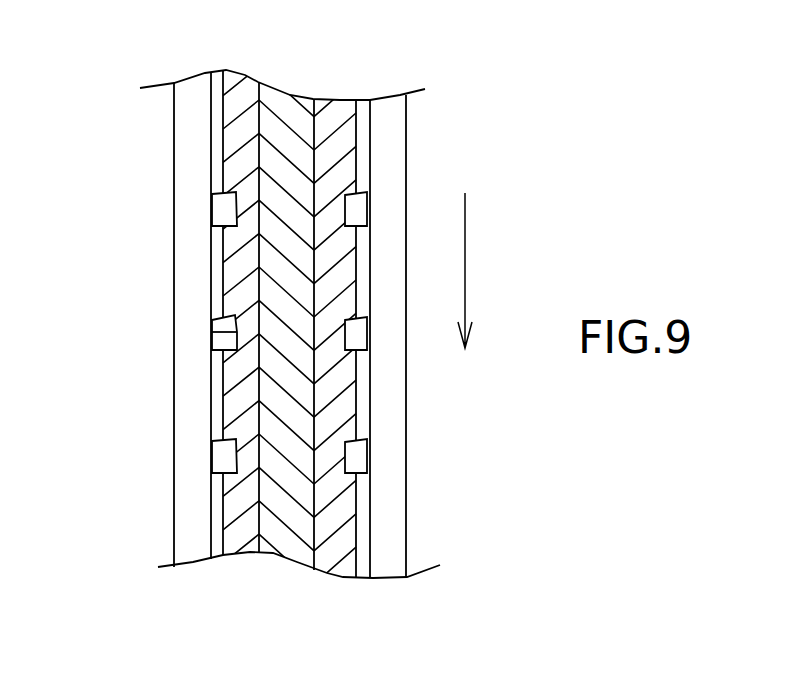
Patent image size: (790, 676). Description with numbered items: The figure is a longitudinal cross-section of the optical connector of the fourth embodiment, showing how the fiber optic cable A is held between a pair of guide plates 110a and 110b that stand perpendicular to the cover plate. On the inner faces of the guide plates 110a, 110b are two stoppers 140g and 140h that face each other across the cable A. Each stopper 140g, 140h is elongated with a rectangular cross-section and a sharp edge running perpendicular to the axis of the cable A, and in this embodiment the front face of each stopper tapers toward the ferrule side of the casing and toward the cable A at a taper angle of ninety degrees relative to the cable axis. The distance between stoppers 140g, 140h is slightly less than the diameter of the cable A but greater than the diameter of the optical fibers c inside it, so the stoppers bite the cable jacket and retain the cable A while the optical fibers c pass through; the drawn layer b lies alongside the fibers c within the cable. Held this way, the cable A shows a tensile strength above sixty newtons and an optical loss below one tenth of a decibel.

The guide plate 110a is at (189, 121).
The guide plate 110b is at (398, 113).
The stopper 140g is at (226, 216).
The stopper 140h is at (361, 212).
The alignment layer b is at (230, 78).
The optical fibers c is at (271, 93).
The fiber optic cable A is at (240, 573).